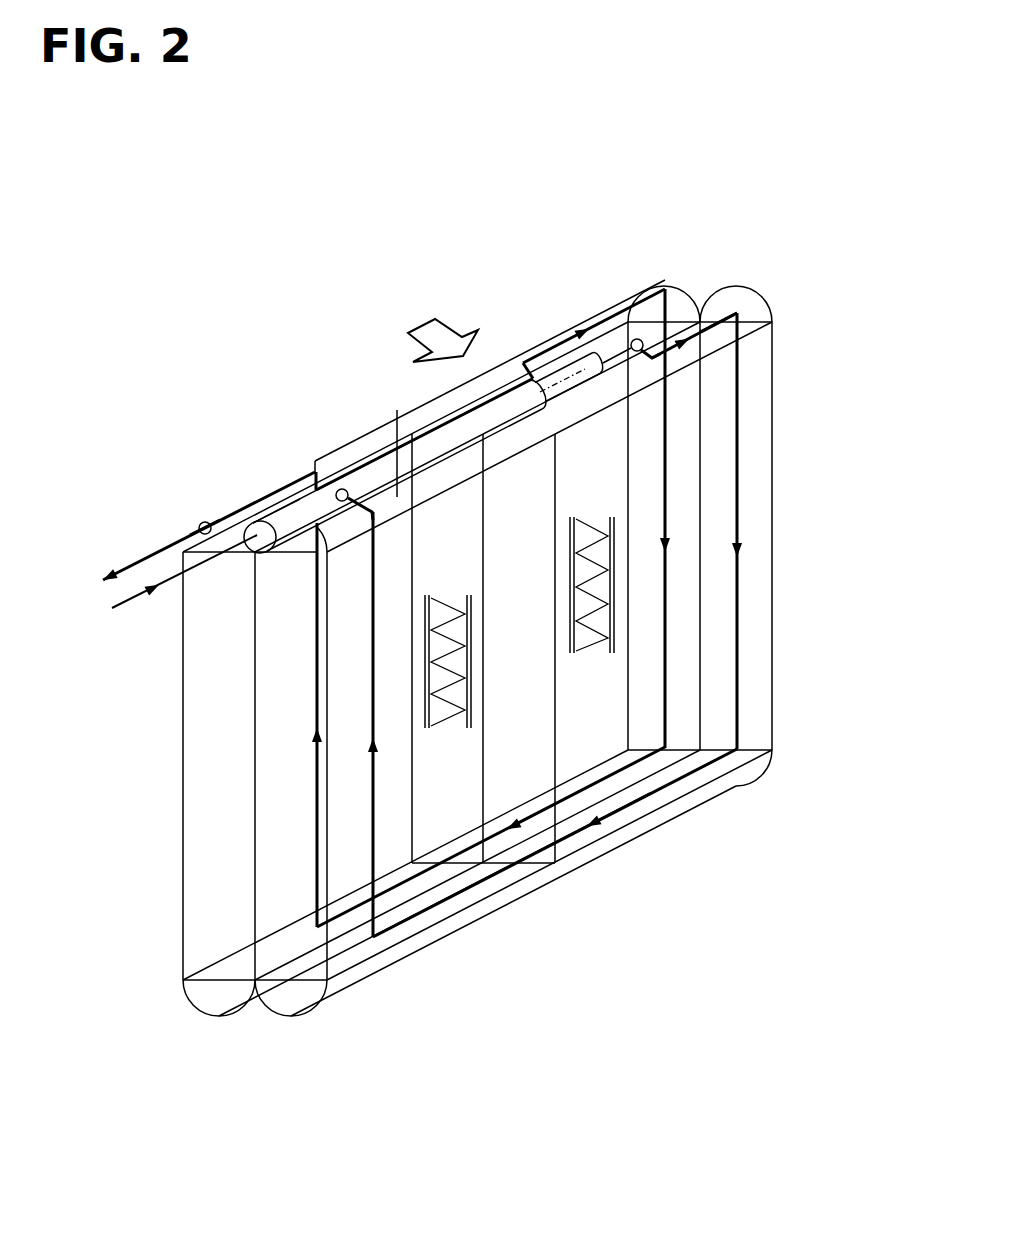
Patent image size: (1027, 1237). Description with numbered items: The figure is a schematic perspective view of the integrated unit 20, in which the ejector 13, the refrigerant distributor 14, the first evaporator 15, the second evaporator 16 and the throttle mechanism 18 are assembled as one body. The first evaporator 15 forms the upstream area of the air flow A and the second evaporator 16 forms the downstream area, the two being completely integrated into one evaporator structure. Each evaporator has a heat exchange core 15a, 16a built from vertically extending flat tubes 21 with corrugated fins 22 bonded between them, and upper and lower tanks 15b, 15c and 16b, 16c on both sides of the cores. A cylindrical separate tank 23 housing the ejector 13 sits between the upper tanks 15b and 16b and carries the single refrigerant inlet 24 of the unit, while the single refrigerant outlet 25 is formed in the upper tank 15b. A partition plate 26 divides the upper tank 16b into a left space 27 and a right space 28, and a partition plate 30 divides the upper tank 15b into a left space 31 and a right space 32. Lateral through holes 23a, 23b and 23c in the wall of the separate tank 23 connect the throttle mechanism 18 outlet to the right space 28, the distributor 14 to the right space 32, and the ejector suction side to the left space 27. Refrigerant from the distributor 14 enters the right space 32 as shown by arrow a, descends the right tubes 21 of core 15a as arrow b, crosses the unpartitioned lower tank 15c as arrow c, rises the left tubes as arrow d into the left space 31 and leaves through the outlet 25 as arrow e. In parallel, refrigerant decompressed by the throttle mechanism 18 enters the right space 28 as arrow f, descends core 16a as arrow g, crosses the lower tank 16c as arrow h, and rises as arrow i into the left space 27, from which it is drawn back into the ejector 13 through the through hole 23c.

The ejector 13 is at (366, 457).
The refrigerant distributor 14 is at (571, 358).
The first evaporator 15 is at (632, 284).
The heat exchange core 15a is at (222, 775).
The upper tank 15b is at (202, 521).
The lower tank 15c is at (208, 998).
The second evaporator 16 is at (781, 373).
The heat exchange core 16a is at (288, 800).
The upper tank 16b is at (770, 302).
The lower tank 16c is at (280, 1002).
The throttle mechanism 18 is at (558, 332).
The integrated unit 20 is at (802, 290).
The tube 21 is at (465, 728).
The fin 22 is at (433, 729).
The separate tank 23 is at (426, 452).
The through hole 23a is at (640, 338).
The through hole 23b is at (553, 355).
The through hole 23c is at (205, 521).
The refrigerant inlet 24 is at (257, 548).
The refrigerant outlet 25 is at (230, 525).
The partition plate 26 is at (490, 433).
The left space 27 is at (377, 456).
The right space 28 is at (713, 350).
The partition plate 30 is at (397, 410).
The left space 31 is at (333, 466).
The right space 32 is at (508, 372).
The air flow A is at (427, 322).
The arrow a is at (603, 347).
The arrow b is at (665, 507).
The arrow c is at (543, 813).
The arrow d is at (315, 843).
The arrow e is at (140, 562).
The arrow f is at (672, 347).
The arrow g is at (737, 592).
The arrow h is at (653, 797).
The arrow i is at (373, 867).